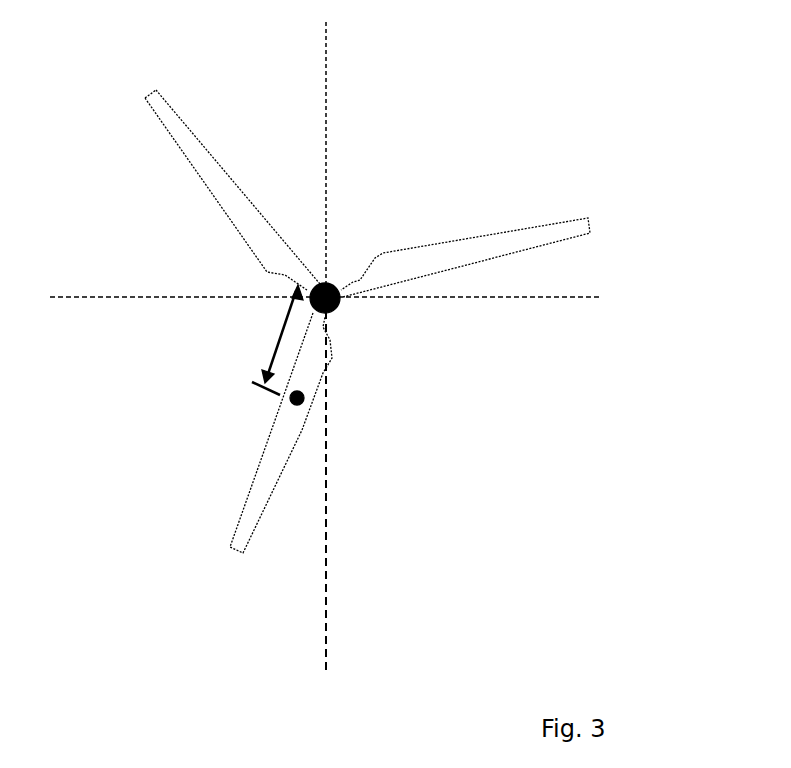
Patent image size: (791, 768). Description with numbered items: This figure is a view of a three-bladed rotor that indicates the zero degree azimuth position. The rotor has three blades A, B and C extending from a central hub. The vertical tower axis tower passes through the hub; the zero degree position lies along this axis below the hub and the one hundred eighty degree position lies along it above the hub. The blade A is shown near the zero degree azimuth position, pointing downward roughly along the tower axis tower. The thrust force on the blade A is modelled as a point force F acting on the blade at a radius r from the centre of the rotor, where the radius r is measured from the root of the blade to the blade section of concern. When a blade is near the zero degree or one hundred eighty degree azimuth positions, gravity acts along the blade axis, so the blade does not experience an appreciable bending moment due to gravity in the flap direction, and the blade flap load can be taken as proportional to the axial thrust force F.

The blade A is at (250, 447).
The blade B is at (194, 180).
The blade C is at (507, 254).
The radius r is at (277, 340).
The point force F is at (300, 398).
The tower axis tower is at (325, 347).